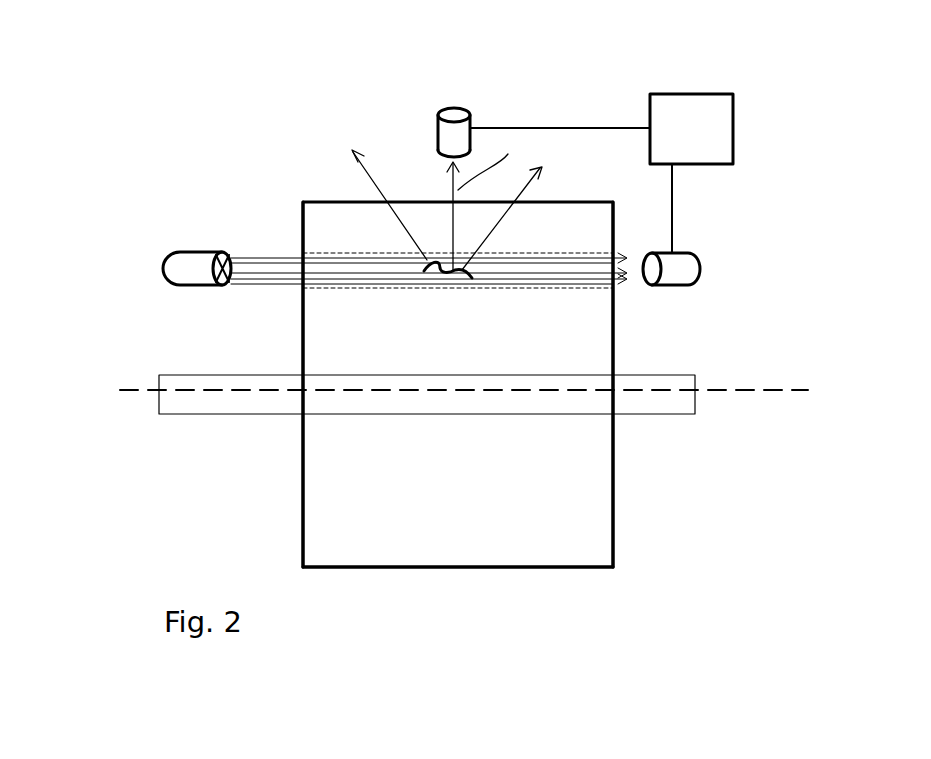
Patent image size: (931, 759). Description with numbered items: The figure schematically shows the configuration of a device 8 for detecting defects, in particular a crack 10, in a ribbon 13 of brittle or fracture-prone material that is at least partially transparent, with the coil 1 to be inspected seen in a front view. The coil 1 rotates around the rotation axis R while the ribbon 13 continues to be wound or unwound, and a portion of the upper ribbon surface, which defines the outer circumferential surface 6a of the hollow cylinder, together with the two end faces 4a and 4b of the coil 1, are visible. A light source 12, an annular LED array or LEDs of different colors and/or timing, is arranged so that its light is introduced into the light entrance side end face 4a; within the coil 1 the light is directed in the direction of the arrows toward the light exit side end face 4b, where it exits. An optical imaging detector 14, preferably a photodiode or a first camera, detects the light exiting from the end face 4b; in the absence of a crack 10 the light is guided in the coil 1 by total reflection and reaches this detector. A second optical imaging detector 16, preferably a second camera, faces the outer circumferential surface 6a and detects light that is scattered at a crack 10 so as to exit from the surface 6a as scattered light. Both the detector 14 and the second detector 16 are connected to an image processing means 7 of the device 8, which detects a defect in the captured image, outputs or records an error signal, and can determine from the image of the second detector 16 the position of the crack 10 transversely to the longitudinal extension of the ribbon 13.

The device for detecting defects 8 is at (220, 178).
The image processing means 7 is at (668, 92).
The second optical imaging detector 16 is at (471, 121).
The optical imaging detector 14 is at (689, 255).
The light source 12 is at (178, 278).
The crack 10 is at (464, 284).
The ribbon 13 is at (157, 375).
The end face 4a is at (302, 357).
The end face 4b is at (614, 342).
The coil 1 is at (614, 455).
The outer circumferential surface 6a is at (588, 521).
The rotation axis R is at (742, 388).